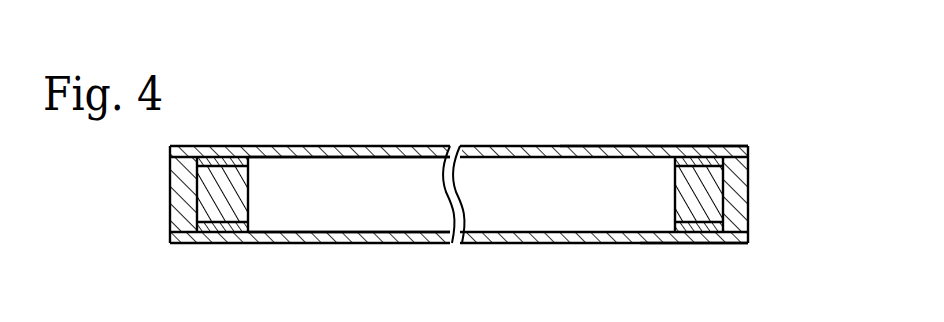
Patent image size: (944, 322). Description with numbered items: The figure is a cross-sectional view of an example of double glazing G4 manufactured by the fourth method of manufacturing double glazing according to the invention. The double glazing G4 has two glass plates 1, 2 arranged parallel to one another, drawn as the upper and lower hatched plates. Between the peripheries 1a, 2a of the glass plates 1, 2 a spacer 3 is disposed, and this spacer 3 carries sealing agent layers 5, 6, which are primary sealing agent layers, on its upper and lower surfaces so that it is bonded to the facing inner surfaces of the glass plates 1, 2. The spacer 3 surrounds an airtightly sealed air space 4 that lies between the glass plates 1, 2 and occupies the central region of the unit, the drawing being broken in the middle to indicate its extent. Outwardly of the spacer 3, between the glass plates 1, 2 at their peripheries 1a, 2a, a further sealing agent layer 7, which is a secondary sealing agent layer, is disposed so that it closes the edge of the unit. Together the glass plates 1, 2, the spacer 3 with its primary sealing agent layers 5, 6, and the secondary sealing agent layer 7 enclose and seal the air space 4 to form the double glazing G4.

The glass plate 1 is at (510, 244).
The periphery of glass plate 1a is at (687, 246).
The glass plate 2 is at (482, 147).
The periphery of glass plate 2a is at (695, 147).
The spacer 3 is at (212, 161).
The air space 4 is at (400, 180).
The sealing agent layer 5 is at (227, 229).
The sealing agent layer 6 is at (246, 170).
The sealing agent layer 7 is at (178, 180).
The double glazing G4 is at (595, 136).